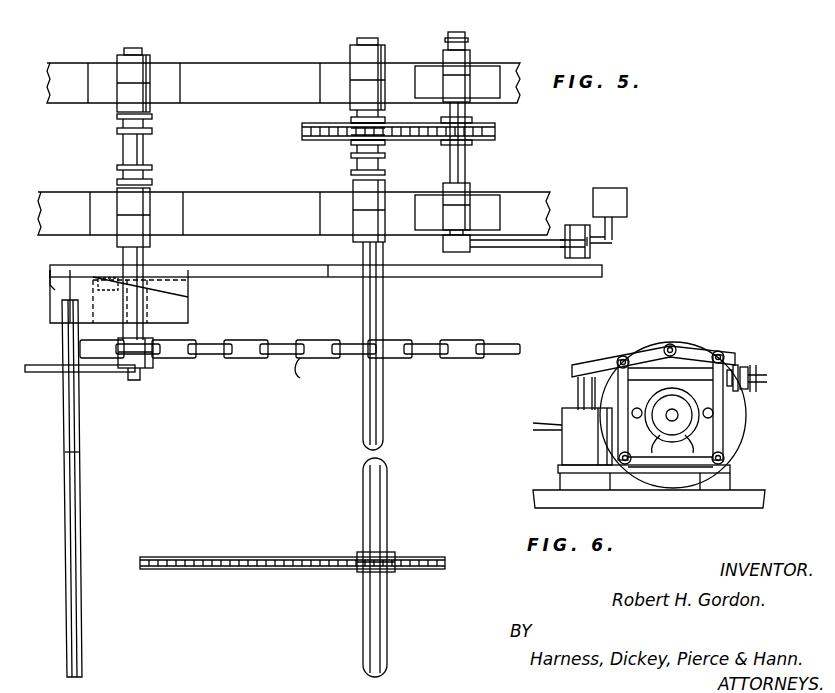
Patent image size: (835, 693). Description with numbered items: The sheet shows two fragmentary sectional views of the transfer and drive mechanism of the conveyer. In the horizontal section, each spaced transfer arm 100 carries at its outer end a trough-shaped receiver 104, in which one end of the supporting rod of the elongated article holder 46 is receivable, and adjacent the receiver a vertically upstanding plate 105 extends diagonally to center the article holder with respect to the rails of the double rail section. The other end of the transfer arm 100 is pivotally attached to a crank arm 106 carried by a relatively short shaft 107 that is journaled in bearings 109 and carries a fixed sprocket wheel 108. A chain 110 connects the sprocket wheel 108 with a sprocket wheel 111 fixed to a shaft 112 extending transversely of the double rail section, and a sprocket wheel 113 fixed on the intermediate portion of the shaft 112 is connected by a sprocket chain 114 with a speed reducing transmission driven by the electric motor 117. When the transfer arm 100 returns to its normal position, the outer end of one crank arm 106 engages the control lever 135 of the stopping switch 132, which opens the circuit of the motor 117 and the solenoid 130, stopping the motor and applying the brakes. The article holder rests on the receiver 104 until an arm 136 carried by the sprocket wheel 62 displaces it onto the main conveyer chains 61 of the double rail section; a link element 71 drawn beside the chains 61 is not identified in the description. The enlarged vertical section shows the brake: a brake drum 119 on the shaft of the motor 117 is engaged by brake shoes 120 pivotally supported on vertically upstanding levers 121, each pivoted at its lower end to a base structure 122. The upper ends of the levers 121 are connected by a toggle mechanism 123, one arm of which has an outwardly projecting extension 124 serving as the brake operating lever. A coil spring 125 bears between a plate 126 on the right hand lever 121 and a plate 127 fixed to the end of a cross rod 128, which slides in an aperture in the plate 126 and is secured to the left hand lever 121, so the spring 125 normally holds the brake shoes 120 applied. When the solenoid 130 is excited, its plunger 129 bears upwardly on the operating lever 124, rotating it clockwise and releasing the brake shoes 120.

In FIG. 5, the article holder 46 is at (82, 452).
In FIG. 5, the main conveyer chains 61 is at (325, 340).
In FIG. 5, the sprocket wheel 62 is at (160, 350).
In FIG. 5, the chain link 71 is at (314, 371).
In FIG. 5, the transfer arm 100 is at (265, 265).
In FIG. 5, the trough-shaped receiver 104 is at (62, 278).
In FIG. 5, the vertically upstanding plate 105 is at (158, 280).
In FIG. 5, the crank arm 106 is at (588, 204).
In FIG. 5, the short shaft 107 is at (468, 160).
In FIG. 5, the sprocket wheel 108 is at (472, 118).
In FIG. 5, the bearings 109 is at (470, 60).
In FIG. 5, the chain 110 is at (415, 135).
In FIG. 5, the sprocket wheel 111 is at (345, 120).
In FIG. 5, the shaft 112 is at (385, 392).
In FIG. 5, the sprocket wheel 113 is at (385, 555).
In FIG. 5, the sprocket chain 114 is at (262, 557).
In FIG. 6, the electric motor 117 is at (735, 430).
In FIG. 6, the brake drum 119 is at (680, 395).
In FIG. 6, the brake shoes 120 is at (650, 448).
In FIG. 6, the vertically upstanding levers 121 is at (723, 400).
In FIG. 6, the base structure 122 is at (725, 505).
In FIG. 6, the toggle mechanism 123 is at (655, 360).
In FIG. 6, the brake operating lever 124 is at (613, 342).
In FIG. 6, the coil spring 125 is at (742, 367).
In FIG. 6, the plate 126 is at (735, 365).
In FIG. 6, the plate 127 is at (775, 357).
In FIG. 6, the cross rod 128 is at (670, 413).
In FIG. 6, the plunger 129 is at (578, 390).
In FIG. 6, the solenoid 130 is at (570, 443).
In FIG. 5, the stopping switch 132 is at (620, 188).
In FIG. 5, the control lever 135 is at (612, 230).
In FIG. 5, the arm 136 is at (40, 372).